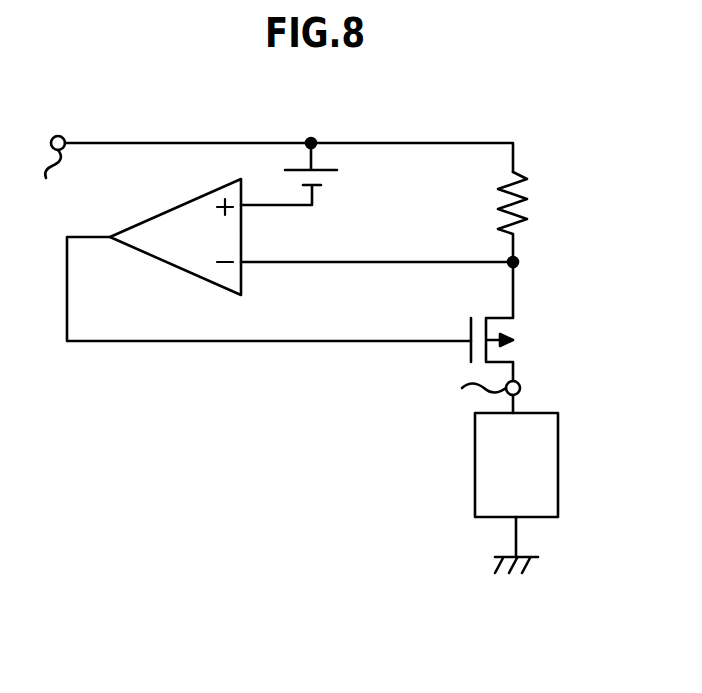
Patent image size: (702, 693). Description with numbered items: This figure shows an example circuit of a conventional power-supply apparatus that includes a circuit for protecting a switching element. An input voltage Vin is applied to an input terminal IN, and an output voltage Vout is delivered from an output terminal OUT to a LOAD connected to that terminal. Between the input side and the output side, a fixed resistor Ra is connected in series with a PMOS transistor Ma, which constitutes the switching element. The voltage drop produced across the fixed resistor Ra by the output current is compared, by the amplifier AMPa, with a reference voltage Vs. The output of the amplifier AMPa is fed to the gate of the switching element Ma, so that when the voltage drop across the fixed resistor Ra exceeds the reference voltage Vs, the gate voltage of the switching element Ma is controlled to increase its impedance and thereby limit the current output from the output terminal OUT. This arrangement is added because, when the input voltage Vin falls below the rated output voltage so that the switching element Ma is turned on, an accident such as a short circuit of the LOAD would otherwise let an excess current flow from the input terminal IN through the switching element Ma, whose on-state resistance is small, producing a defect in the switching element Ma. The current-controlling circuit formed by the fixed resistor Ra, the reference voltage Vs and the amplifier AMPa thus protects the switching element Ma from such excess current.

The input terminal IN is at (47, 175).
The input voltage Vin is at (57, 123).
The reference voltage Vs is at (314, 174).
The amplifier AMPa is at (175, 237).
The fixed resistor Ra is at (490, 217).
The PMOS transistor Ma is at (489, 321).
The output terminal OUT is at (459, 385).
The output voltage Vout is at (572, 386).
The load LOAD is at (516, 465).